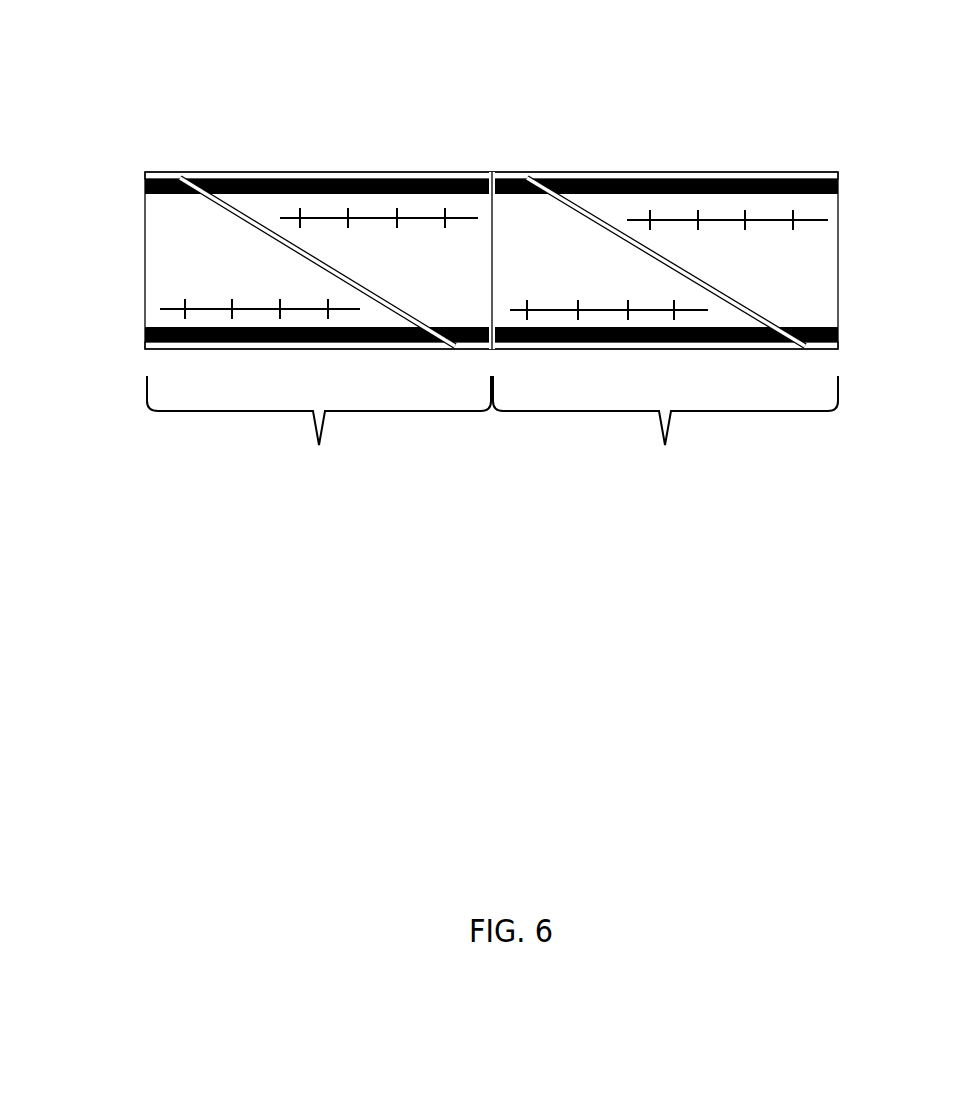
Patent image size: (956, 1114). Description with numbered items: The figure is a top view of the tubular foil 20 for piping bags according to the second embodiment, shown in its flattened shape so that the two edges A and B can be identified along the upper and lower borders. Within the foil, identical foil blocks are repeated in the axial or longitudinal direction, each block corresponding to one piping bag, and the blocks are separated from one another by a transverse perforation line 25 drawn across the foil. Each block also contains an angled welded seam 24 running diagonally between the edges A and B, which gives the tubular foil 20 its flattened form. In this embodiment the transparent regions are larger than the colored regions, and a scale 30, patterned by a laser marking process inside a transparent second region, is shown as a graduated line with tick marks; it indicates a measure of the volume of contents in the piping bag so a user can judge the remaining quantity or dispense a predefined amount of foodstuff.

The tubular foil 20 is at (158, 46).
The angled welded seam 24 is at (260, 215).
The transverse perforation line 25 is at (500, 267).
The scale 30 is at (380, 215).
The edge A is at (130, 339).
The edge B is at (130, 174).